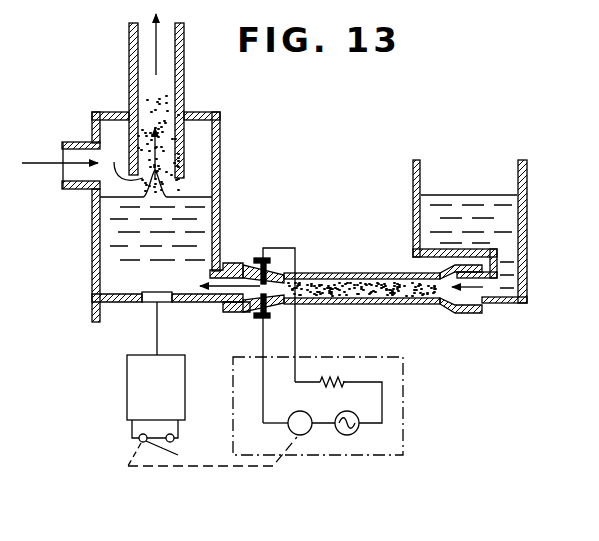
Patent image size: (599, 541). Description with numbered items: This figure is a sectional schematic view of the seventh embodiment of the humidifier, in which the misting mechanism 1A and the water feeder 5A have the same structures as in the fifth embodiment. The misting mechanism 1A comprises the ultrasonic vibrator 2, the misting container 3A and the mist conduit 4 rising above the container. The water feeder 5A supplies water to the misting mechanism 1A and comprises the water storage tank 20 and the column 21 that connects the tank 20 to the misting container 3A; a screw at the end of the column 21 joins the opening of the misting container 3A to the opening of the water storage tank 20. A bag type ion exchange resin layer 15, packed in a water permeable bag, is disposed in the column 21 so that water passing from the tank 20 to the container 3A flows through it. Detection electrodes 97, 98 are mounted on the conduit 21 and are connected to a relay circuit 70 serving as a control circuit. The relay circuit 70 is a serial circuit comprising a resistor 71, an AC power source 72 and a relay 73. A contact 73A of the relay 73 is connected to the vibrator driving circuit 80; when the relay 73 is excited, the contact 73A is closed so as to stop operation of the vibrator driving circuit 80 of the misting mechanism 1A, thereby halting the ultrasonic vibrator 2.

The misting mechanism 1A is at (115, 312).
The ultrasonic vibrator 2 is at (162, 302).
The misting container 3A is at (92, 270).
The mist conduit 4 is at (183, 53).
The water feeder 5A is at (470, 318).
The bag type ion exchange resin layer 15 is at (385, 301).
The water storage tank 20 is at (413, 217).
The column 21 is at (314, 303).
The relay circuit 70 is at (403, 394).
The resistor 71 is at (342, 375).
The AC power source 72 is at (345, 437).
The relay 73 is at (298, 437).
The contact 73A is at (155, 455).
The vibrator driving circuit 80 is at (127, 383).
The detection electrode 97 is at (256, 315).
The detection electrode 98 is at (264, 258).